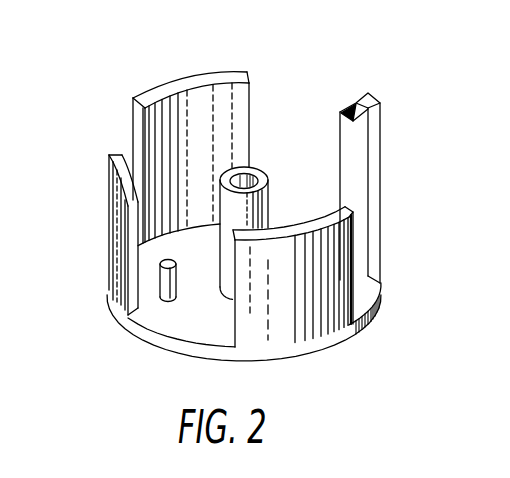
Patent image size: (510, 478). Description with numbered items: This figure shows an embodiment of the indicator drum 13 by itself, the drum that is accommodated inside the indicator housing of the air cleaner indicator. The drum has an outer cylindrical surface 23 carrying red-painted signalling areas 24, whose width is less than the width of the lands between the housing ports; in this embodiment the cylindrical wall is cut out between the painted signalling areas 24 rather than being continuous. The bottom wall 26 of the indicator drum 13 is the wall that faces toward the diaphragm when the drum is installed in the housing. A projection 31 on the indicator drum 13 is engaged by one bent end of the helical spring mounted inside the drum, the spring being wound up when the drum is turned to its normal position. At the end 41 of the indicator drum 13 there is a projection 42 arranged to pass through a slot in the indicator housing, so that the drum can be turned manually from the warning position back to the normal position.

The indicator drum 13 is at (308, 63).
The outer cylindrical surface 23 is at (380, 241).
The signalling areas 24 is at (115, 218).
The bottom wall 26 is at (143, 331).
The projection 31 is at (175, 287).
The end 41 is at (158, 90).
The projection 42 is at (368, 96).